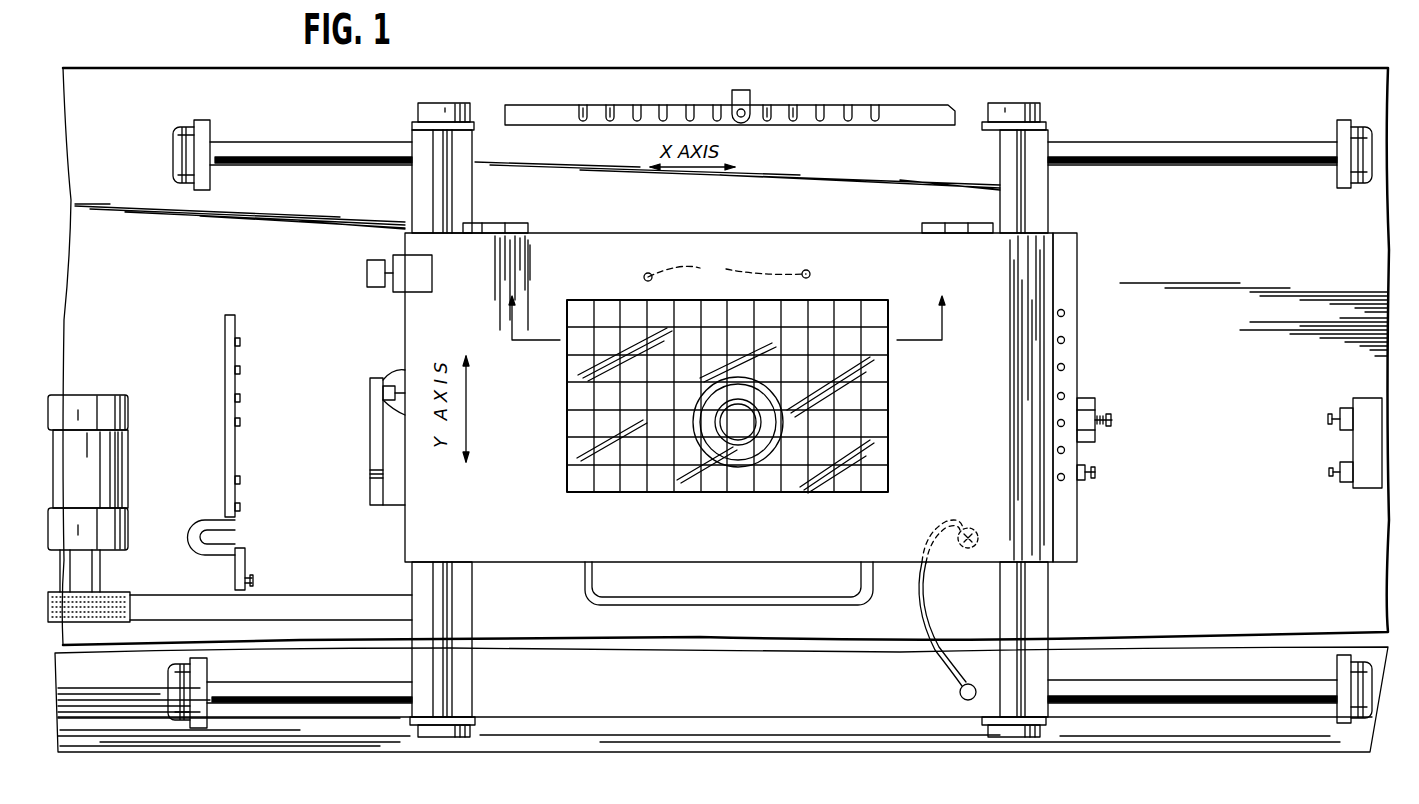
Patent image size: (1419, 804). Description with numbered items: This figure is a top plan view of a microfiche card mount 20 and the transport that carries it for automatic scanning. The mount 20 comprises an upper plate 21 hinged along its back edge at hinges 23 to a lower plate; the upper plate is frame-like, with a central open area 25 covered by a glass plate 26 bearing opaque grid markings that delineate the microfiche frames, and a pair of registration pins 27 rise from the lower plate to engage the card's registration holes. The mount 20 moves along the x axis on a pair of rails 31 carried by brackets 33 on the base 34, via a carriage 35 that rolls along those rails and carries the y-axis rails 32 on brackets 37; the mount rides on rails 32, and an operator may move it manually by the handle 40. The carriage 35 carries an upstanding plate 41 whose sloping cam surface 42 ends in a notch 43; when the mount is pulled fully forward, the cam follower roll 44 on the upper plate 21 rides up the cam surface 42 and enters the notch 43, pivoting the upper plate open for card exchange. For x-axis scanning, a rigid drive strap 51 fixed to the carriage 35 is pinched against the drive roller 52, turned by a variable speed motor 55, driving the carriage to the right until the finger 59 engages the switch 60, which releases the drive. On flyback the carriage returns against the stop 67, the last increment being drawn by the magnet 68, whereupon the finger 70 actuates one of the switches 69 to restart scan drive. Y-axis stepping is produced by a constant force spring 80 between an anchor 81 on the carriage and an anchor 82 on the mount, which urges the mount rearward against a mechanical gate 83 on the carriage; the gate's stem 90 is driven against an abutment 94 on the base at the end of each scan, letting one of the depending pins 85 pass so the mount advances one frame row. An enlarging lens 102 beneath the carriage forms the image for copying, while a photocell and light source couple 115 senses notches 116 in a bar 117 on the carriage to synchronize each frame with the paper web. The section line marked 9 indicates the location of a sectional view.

The microfiche card mount 20 is at (729, 392).
The upper plate 21 is at (540, 562).
The hinges 23 is at (525, 224).
The open area 25 is at (744, 396).
The glass plate 26 is at (868, 402).
The registration pins 27 is at (727, 268).
The rails 31 is at (309, 160).
The rails 32 is at (448, 601).
The brackets 33 is at (209, 138).
The base 34 is at (684, 749).
The carriage 35 is at (642, 710).
The brackets 37 is at (472, 125).
The handle 40 is at (690, 605).
The upstanding plate 41 is at (370, 450).
The cam surface 42 is at (370, 389).
The notch 43 is at (373, 497).
The cam follower roll 44 is at (383, 251).
The drive strap 51 is at (205, 606).
The drive roller 52 is at (125, 593).
The motor 55 is at (114, 482).
The finger 59 is at (1096, 474).
The switch 60 is at (1331, 471).
The stop 67 is at (252, 586).
The magnet 68 is at (198, 528).
The switches 69 is at (240, 443).
The finger 70 is at (378, 405).
The constant force spring 80 is at (934, 610).
The anchor 81 is at (980, 674).
The anchor 82 is at (960, 548).
The mechanical gate 83 is at (1092, 397).
The pins 85 is at (1065, 313).
The stem 90 is at (1112, 423).
The abutment 94 is at (1329, 419).
The enlarging lens 102 is at (742, 470).
The photocell and light source couple 115 is at (750, 103).
The notches 116 is at (628, 110).
The bar 117 is at (932, 109).
The section line 9 is at (724, 305).